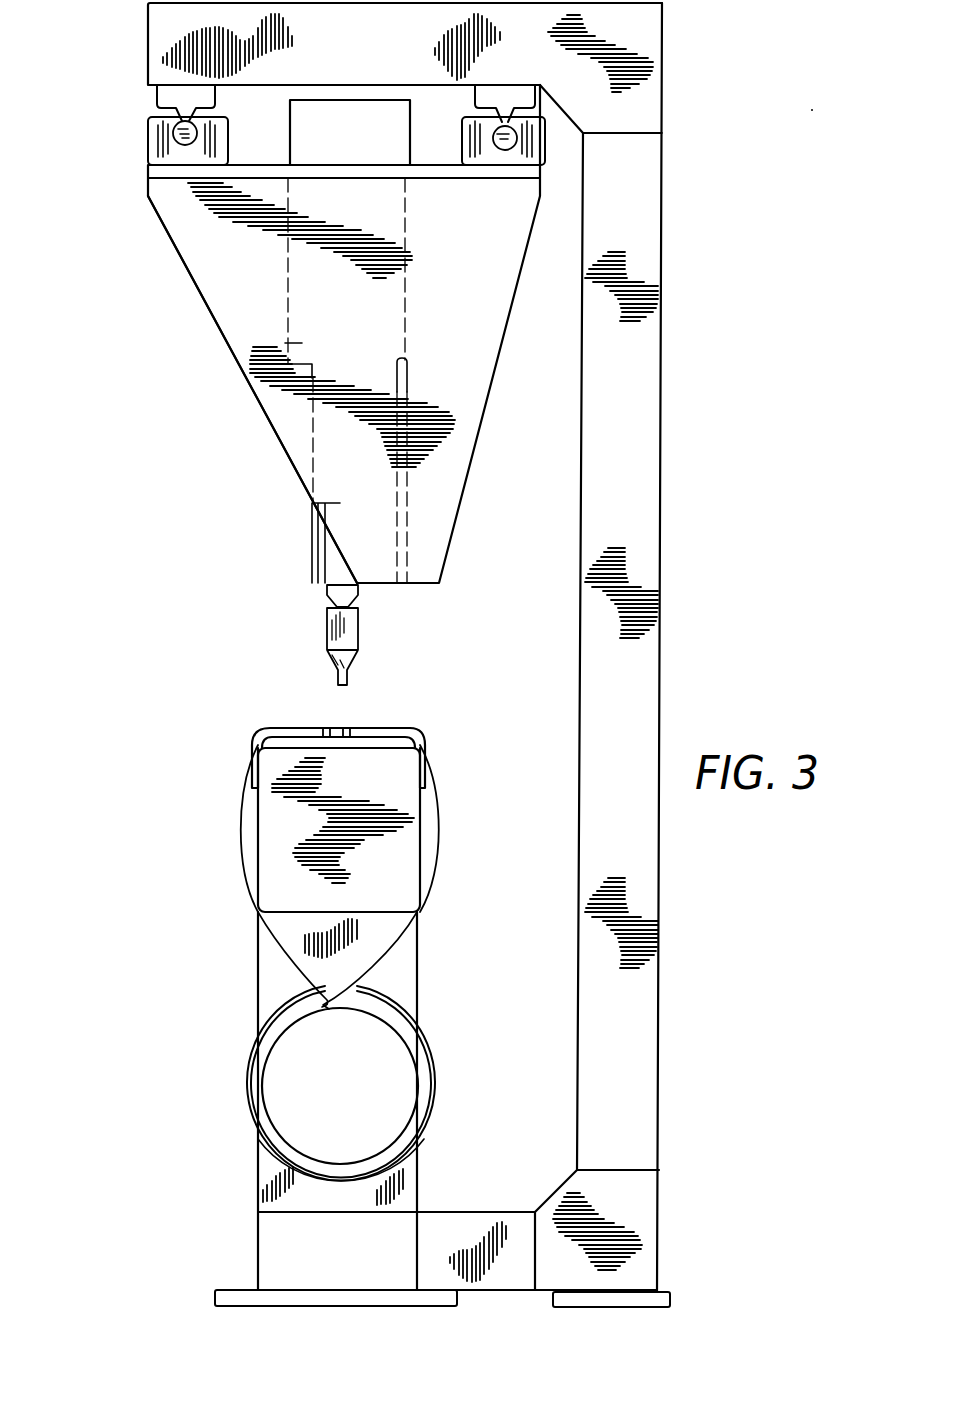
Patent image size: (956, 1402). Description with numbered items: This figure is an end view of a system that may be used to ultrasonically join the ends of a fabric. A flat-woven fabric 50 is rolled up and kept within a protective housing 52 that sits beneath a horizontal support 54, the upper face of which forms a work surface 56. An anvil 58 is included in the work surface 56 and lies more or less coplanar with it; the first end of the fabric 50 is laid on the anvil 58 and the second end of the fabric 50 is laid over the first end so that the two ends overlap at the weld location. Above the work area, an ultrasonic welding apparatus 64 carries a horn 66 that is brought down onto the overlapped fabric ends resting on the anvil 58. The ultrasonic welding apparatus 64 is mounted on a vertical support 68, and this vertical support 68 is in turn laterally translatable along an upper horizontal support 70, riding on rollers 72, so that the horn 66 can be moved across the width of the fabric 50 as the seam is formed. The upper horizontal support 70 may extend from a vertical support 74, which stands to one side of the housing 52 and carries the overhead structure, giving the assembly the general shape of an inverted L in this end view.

The flat-woven fabric 50 is at (245, 897).
The protective housing 52 is at (423, 1037).
The horizontal support 54 is at (398, 892).
The work surface 56 is at (427, 745).
The anvil 58 is at (340, 725).
The ultrasonic welding apparatus 64 is at (236, 356).
The horn 66 is at (352, 632).
The vertical support 68 is at (473, 348).
The horizontal support 70 is at (160, 32).
The rollers 72 is at (177, 133).
The vertical support 74 is at (635, 1085).